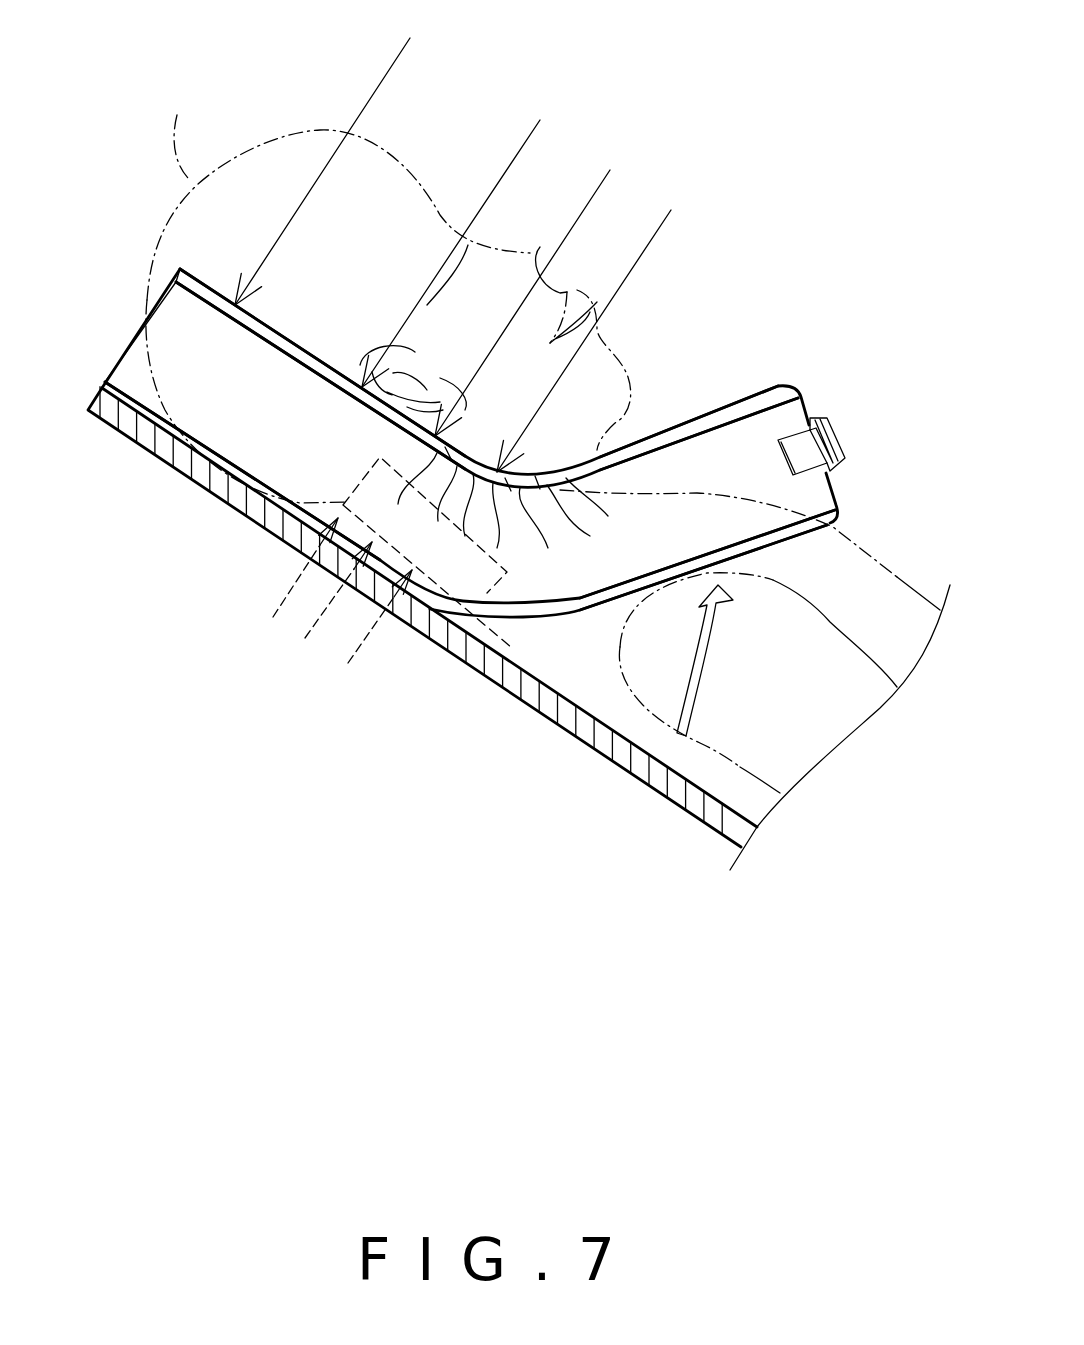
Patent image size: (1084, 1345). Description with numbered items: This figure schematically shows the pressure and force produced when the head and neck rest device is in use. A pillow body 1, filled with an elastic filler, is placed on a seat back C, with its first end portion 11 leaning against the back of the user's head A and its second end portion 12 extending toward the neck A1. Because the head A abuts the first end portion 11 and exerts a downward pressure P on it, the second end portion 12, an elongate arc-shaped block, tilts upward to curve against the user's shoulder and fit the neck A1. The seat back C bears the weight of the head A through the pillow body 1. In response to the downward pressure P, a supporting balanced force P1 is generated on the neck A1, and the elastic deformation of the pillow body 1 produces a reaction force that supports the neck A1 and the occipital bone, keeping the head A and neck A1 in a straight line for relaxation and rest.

The pillow body 1 is at (535, 587).
The first end portion 11 is at (197, 320).
The second end portion 12 is at (753, 407).
The seat back C is at (625, 748).
The head A is at (177, 115).
The neck A1 is at (600, 490).
The downward pressure P is at (462, 236).
The supporting balanced force P1 is at (381, 578).